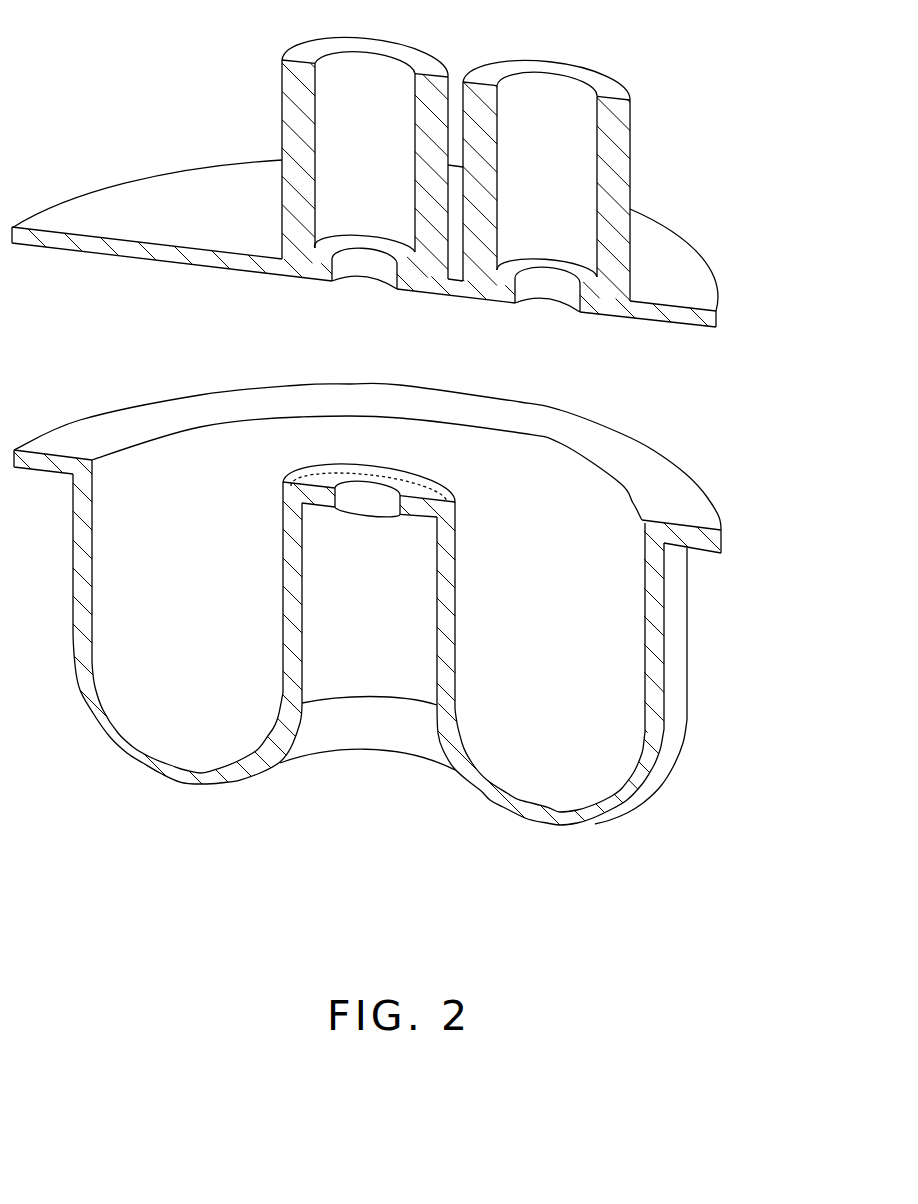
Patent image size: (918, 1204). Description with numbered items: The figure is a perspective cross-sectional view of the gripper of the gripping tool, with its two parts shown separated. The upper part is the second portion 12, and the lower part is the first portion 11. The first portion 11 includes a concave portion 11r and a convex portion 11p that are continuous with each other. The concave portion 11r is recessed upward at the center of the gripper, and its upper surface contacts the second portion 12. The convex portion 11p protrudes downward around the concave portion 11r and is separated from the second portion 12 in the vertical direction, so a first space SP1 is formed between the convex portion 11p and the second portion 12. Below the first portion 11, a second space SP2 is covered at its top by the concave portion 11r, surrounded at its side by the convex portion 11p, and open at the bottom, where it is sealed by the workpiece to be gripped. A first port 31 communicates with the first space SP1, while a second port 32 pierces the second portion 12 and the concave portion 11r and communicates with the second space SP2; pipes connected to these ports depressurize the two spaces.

The first portion 11 is at (367, 680).
The convex portion 11p is at (240, 772).
The concave portion 11r is at (323, 498).
The second portion 12 is at (685, 272).
The first port 31 is at (632, 137).
The second port 32 is at (282, 108).
The first space SP1 is at (578, 765).
The second space SP2 is at (383, 673).